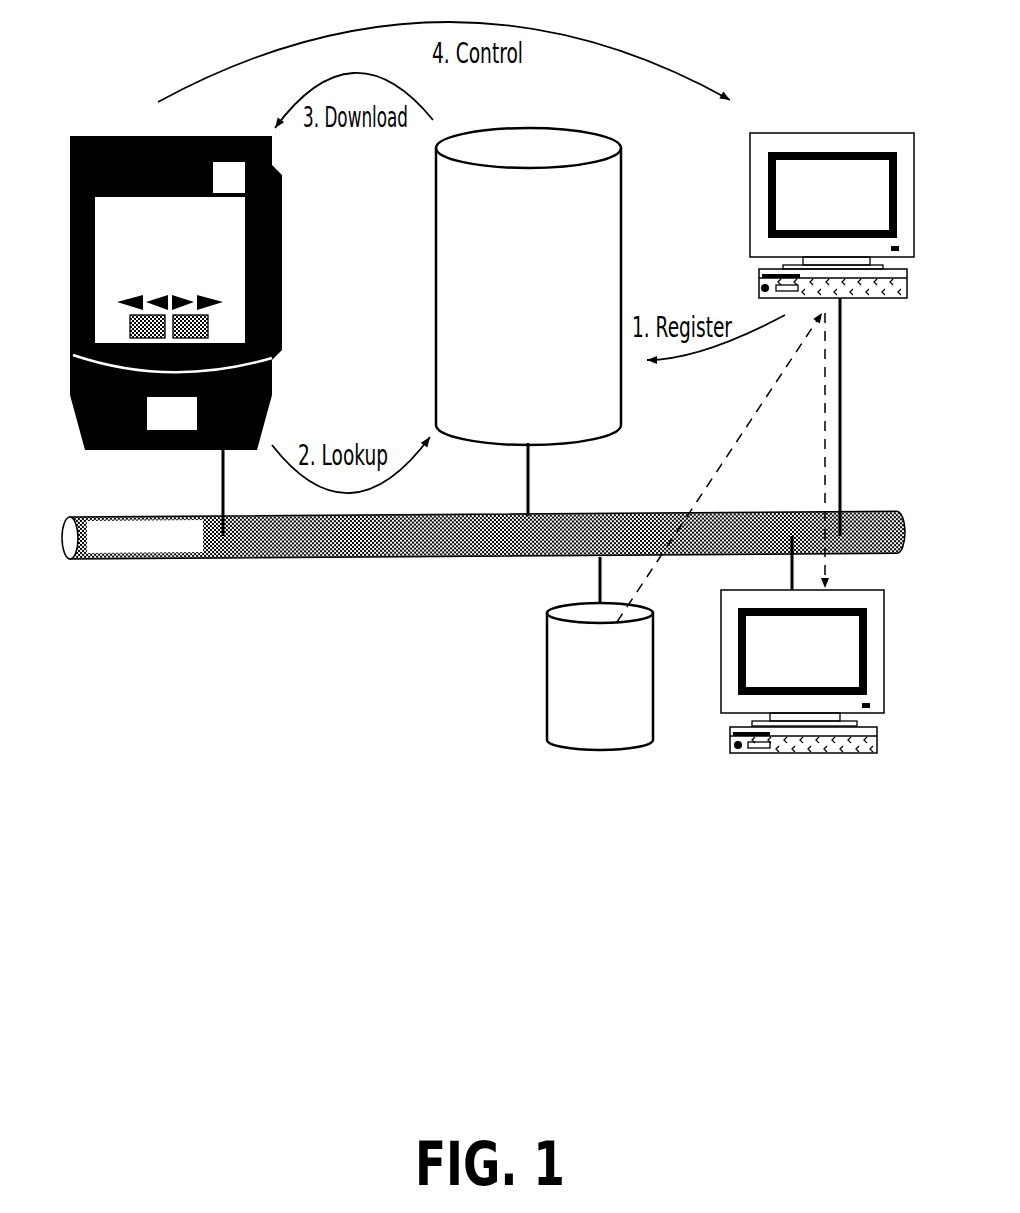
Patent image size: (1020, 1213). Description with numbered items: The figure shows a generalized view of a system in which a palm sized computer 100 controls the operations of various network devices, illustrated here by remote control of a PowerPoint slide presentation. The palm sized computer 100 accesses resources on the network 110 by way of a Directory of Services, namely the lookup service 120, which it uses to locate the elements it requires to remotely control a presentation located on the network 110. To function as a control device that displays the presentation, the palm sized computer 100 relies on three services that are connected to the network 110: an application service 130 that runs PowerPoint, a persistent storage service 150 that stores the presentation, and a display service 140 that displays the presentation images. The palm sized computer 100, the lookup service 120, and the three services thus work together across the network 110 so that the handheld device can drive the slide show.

The palm sized computer 100 is at (158, 427).
The network 110 is at (120, 548).
The lookup service 120 is at (516, 283).
The application service 130 is at (757, 152).
The display service 140 is at (740, 753).
The persistent storage service 150 is at (586, 656).